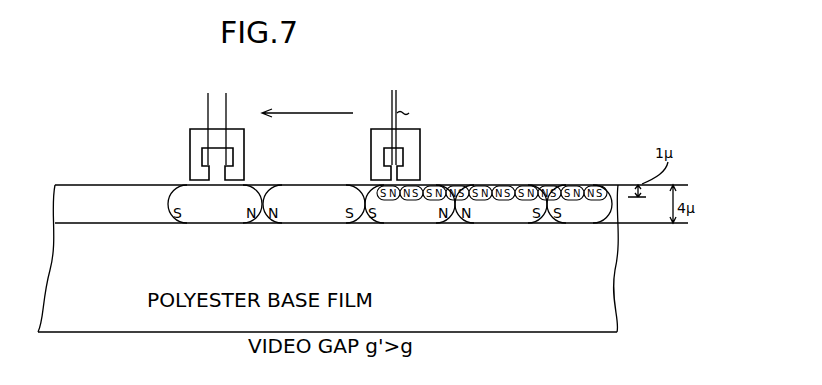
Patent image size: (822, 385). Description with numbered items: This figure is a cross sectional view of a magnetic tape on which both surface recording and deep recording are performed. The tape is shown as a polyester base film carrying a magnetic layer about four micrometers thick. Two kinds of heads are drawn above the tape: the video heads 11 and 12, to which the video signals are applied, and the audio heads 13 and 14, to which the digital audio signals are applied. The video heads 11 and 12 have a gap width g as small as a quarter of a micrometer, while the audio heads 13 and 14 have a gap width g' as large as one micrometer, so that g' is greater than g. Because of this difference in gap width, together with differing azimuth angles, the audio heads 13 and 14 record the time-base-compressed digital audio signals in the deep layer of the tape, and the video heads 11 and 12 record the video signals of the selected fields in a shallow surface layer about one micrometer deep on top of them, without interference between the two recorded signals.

The video head 11 is at (421, 120).
The video head 12 is at (421, 128).
The audio head 13 is at (183, 122).
The audio head 14 is at (190, 129).